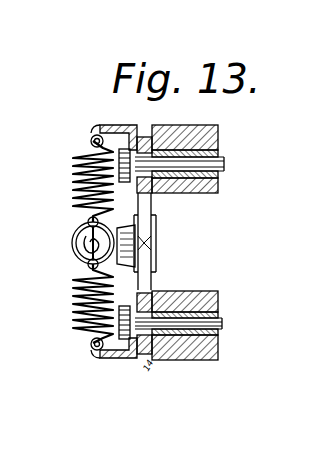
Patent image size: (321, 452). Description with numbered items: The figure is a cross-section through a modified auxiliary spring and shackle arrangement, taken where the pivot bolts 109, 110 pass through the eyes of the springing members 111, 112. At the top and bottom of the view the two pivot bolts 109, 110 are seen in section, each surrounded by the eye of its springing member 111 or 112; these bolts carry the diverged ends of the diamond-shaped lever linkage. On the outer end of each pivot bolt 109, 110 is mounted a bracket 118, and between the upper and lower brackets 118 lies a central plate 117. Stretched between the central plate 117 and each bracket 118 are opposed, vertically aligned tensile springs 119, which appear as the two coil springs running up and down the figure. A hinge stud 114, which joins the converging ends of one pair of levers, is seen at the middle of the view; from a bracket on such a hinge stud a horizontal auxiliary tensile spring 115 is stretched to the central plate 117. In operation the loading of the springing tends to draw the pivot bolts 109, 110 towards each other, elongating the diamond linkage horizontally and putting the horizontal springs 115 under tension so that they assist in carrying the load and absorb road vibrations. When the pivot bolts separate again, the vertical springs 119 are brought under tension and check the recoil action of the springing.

The bolt 109 is at (224, 163).
The bolt 110 is at (220, 322).
The springing member 111 is at (216, 128).
The springing member 112 is at (220, 360).
The hinge stud 114 is at (143, 238).
The auxiliary tensile spring 115 is at (72, 241).
The central plate 117 is at (84, 247).
The bracket 118 is at (101, 126).
The tensile spring 119 is at (73, 164).